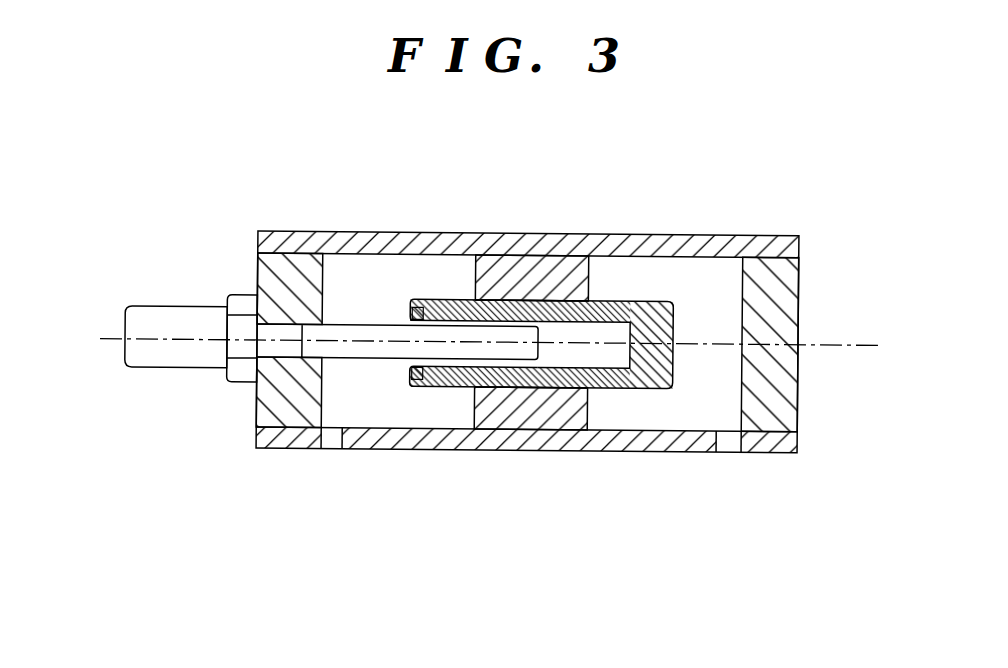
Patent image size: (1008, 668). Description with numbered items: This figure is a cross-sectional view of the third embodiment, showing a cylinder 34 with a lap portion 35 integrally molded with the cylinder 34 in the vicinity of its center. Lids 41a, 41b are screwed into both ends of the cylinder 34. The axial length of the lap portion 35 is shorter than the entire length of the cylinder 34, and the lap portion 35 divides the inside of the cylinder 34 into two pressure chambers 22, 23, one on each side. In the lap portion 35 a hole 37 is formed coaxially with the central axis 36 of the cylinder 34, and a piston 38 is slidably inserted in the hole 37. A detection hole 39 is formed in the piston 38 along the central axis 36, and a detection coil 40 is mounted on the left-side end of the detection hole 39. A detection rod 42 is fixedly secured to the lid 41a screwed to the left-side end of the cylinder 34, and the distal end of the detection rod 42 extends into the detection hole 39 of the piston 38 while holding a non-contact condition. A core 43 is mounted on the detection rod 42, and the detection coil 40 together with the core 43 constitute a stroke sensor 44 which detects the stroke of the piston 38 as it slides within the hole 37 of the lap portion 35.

The pressure chamber 22 is at (694, 409).
The pressure chamber 23 is at (382, 402).
The cylinder 34 is at (659, 250).
The lap portion 35 is at (512, 285).
The central axis 36 is at (817, 340).
The hole 37 is at (572, 295).
The piston 38 is at (648, 383).
The detection hole 39 is at (600, 349).
The detection coil 40 is at (421, 301).
The lid 41a is at (275, 287).
The lid 41b is at (756, 296).
The detection rod 42 is at (289, 343).
The core 43 is at (376, 342).
The stroke sensor 44 is at (398, 256).